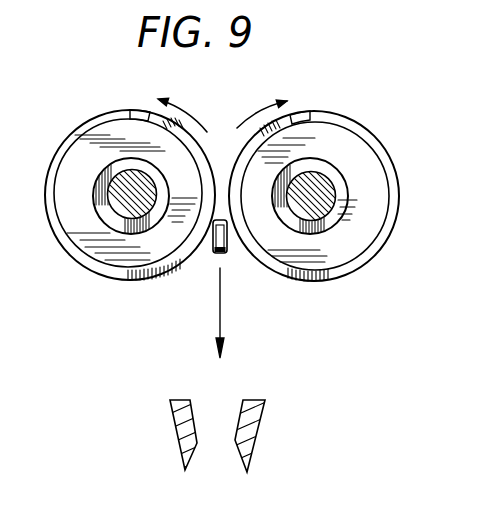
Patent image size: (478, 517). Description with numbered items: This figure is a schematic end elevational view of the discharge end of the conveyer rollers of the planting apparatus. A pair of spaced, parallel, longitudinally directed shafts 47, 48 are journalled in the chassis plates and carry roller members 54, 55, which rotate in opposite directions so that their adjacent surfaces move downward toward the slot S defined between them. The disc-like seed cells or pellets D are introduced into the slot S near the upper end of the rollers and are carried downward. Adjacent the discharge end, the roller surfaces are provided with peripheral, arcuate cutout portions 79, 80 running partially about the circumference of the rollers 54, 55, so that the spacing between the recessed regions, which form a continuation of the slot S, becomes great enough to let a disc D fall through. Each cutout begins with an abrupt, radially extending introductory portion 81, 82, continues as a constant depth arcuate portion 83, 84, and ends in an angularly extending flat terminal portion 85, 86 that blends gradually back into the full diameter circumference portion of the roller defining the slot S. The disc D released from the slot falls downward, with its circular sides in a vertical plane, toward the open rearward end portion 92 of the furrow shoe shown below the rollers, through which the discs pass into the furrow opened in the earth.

The shaft 47 is at (317, 207).
The shaft 48 is at (117, 197).
The roller member 54 is at (377, 179).
The roller member 55 is at (58, 176).
The peripheral arcuate cutout portion 79 is at (292, 111).
The peripheral arcuate cutout portion 80 is at (148, 111).
The radially extending introductory portion 81 is at (310, 117).
The radially extending introductory portion 82 is at (134, 113).
The constant depth arcuate portion 83 is at (237, 197).
The constant depth arcuate portion 84 is at (204, 196).
The angularly extending flat terminal portion 85 is at (329, 276).
The angularly extending flat terminal portion 86 is at (107, 273).
The open rearward end portion 92 is at (257, 436).
The slot S is at (220, 179).
The disc D is at (227, 253).